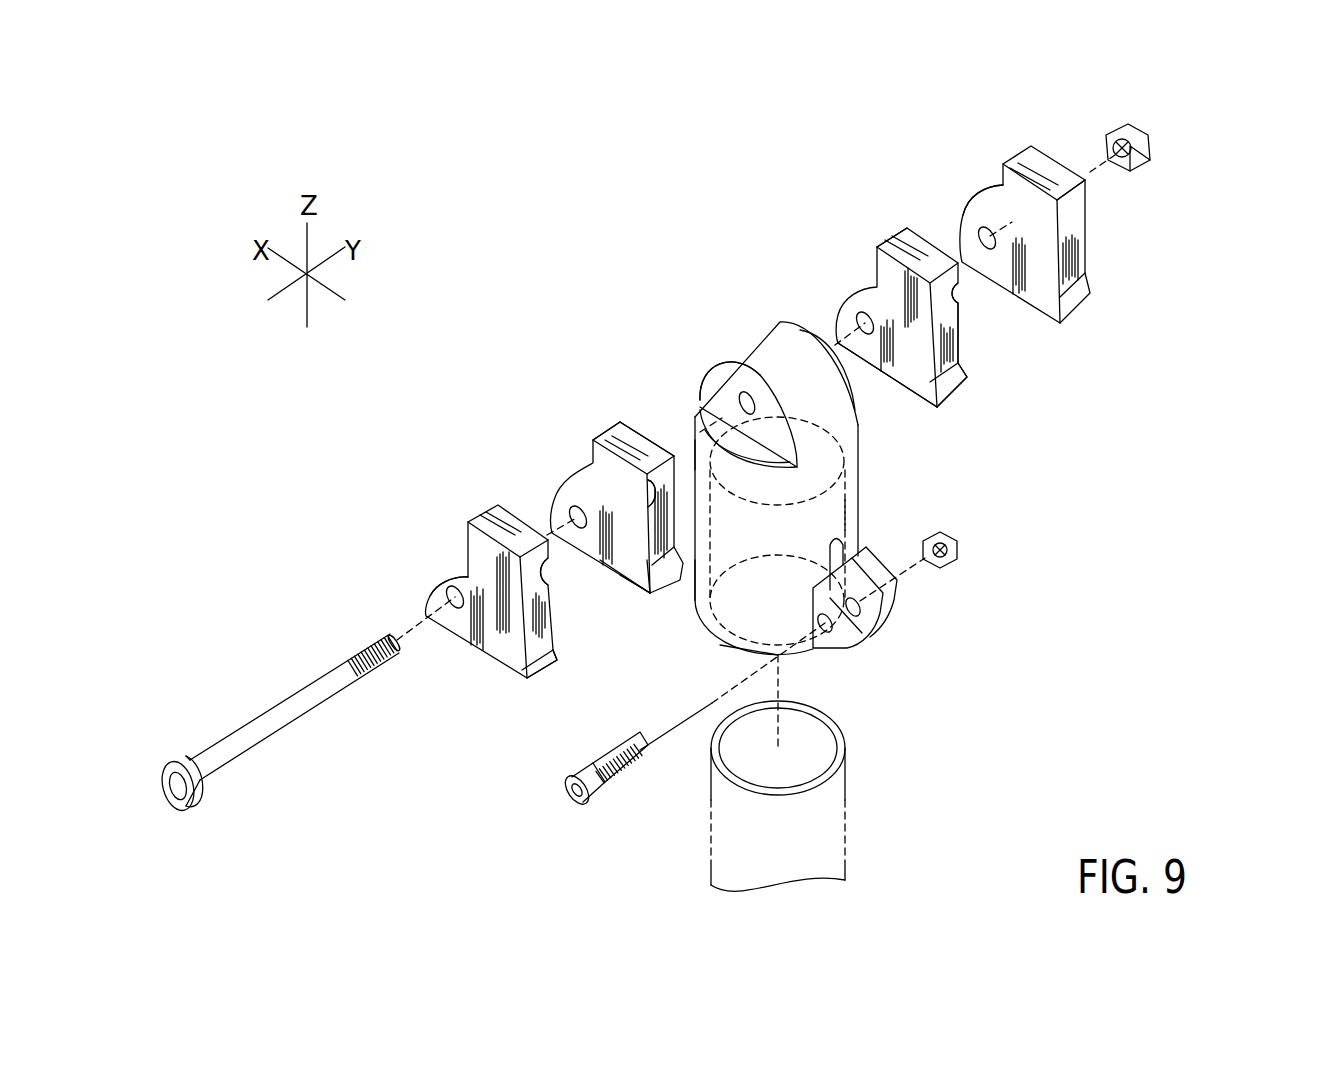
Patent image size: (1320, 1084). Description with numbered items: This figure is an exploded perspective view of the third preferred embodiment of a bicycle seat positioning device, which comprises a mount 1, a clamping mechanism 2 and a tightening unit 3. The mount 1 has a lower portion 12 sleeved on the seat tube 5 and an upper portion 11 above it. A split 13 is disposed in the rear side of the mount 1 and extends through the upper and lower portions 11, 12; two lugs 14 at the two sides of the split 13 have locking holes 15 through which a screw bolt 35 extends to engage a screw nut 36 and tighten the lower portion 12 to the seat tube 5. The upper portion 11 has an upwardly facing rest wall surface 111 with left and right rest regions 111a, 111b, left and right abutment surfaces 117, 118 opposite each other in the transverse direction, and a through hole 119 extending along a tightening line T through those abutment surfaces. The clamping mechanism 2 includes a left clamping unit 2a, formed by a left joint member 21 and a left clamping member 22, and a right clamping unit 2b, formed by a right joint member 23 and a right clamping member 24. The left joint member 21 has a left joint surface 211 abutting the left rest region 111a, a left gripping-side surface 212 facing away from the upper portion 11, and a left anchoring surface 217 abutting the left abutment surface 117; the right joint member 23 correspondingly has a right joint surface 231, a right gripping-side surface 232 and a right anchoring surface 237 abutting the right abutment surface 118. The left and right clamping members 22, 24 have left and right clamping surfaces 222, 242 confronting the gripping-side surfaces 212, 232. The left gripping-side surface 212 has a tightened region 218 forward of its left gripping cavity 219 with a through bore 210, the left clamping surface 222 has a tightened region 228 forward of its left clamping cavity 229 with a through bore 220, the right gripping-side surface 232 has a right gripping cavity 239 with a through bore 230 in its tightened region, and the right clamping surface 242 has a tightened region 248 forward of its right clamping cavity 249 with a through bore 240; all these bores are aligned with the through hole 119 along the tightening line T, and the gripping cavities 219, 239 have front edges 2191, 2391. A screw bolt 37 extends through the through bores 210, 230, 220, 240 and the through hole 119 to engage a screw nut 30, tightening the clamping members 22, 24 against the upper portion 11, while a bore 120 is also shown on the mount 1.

The mount 1 is at (784, 314).
The upper portion 11 is at (689, 403).
The lower portion 12 is at (770, 663).
The split 13 is at (843, 548).
The lugs 14 is at (880, 590).
The locking holes 15 is at (845, 650).
The left abutment surface 117 is at (717, 377).
The right abutment surface 118 is at (818, 333).
The through hole 119 is at (750, 390).
The inner bore 120 is at (857, 512).
The rest wall surface 111 is at (1052, 443).
The left rest region 111a is at (758, 455).
The right rest region 111b is at (857, 413).
The clamping mechanism 2 is at (620, 407).
The left clamping unit 2a is at (528, 265).
The right clamping unit 2b is at (883, 122).
The left joint member 21 is at (602, 422).
The left clamping member 22 is at (477, 505).
The right joint member 23 is at (880, 237).
The right clamping member 24 is at (1010, 150).
The through bore 210 is at (634, 588).
The left joint surface 211 is at (632, 615).
The left gripping-side surface 212 is at (613, 507).
The left anchoring surface 217 is at (690, 598).
The tightened region 218 is at (560, 507).
The left gripping cavity 219 is at (593, 457).
The front edge 2191 is at (597, 470).
The through bore 220 is at (455, 610).
The left clamping surface 222 is at (560, 640).
The tightened region 228 is at (462, 577).
The left clamping cavity 229 is at (557, 597).
The through bore 230 is at (860, 312).
The right joint surface 231 is at (920, 395).
The right gripping-side surface 232 is at (962, 328).
The right anchoring surface 237 is at (958, 400).
The right gripping cavity 239 is at (957, 295).
The front edge 2391 is at (898, 228).
The through bore 240 is at (983, 235).
The right clamping surface 242 is at (643, 435).
The tightened region 248 is at (972, 228).
The right clamping cavity 249 is at (1070, 233).
The tightening unit 3 is at (307, 675).
The screw nut 30 is at (1150, 152).
The screw bolt 35 is at (573, 795).
The screw nut 36 is at (955, 537).
The screw bolt 37 is at (277, 712).
The seat tube 5 is at (847, 858).
The tightening line T is at (400, 615).